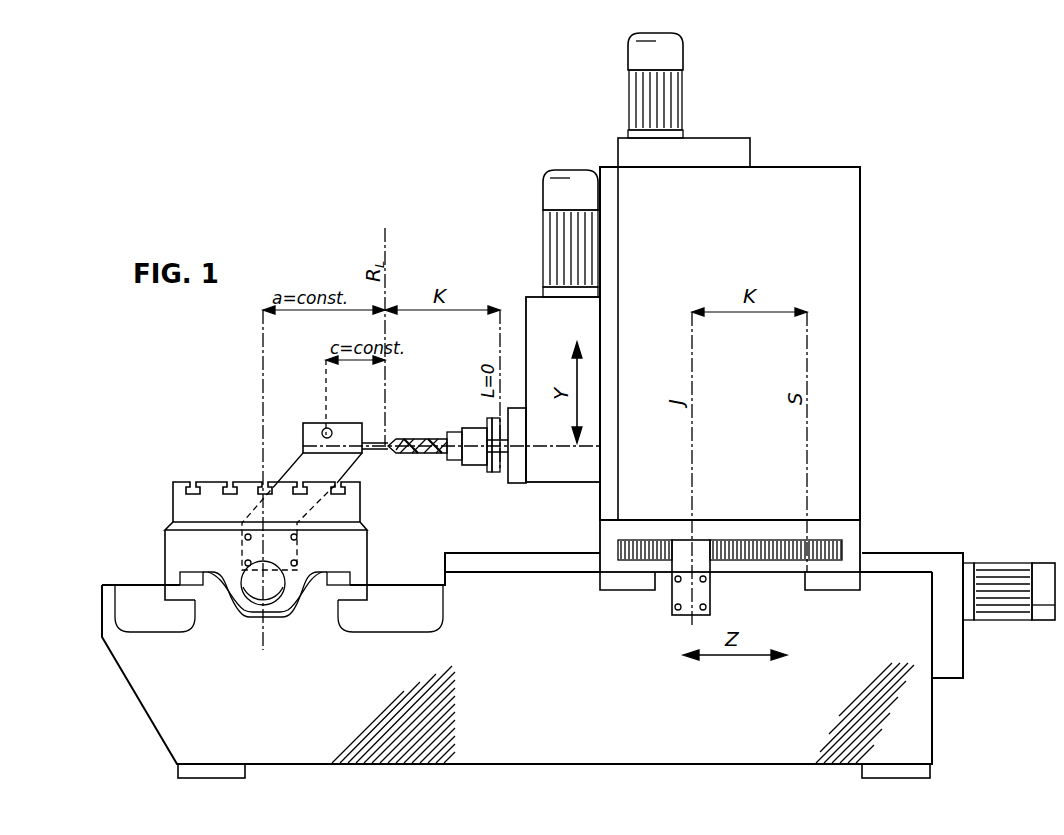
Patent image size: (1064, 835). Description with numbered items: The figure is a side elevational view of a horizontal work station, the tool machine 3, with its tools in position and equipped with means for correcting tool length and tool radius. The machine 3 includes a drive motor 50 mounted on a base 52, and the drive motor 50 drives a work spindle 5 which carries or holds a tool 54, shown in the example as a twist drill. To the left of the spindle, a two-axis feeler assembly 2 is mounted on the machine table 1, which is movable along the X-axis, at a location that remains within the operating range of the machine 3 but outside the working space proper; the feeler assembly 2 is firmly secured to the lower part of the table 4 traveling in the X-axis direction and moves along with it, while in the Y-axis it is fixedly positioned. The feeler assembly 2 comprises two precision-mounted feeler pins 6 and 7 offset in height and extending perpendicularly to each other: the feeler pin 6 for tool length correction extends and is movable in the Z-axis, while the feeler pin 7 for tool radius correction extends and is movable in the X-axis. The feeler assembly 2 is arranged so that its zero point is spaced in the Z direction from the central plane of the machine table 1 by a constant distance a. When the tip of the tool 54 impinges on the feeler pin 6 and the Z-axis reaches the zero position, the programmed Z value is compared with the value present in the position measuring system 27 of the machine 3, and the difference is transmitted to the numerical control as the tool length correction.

The machine table 1 is at (530, 597).
The two-axis feeler assembly 2 is at (303, 440).
The tool machine 3 is at (140, 702).
The table 4 is at (185, 502).
The work spindle 5 is at (467, 430).
The feeler pin 6 is at (373, 452).
The feeler pin 7 is at (332, 430).
The position measuring system 27 is at (843, 548).
The drive motor 50 is at (550, 198).
The base 52 is at (640, 757).
The tool 54 is at (405, 438).